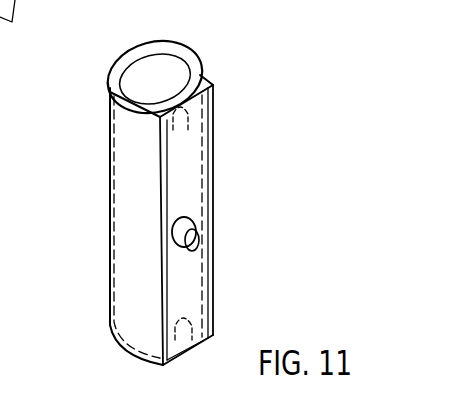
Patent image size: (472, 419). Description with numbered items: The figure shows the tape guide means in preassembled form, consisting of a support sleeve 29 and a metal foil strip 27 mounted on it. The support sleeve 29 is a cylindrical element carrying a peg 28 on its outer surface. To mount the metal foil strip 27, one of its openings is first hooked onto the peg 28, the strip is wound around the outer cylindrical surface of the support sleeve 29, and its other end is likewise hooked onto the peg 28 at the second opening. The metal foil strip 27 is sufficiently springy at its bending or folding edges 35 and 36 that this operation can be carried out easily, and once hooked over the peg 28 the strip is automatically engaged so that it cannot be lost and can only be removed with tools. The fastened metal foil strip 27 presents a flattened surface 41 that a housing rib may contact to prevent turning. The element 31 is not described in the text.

The metal foil strip 27 is at (123, 157).
The peg 28 is at (205, 250).
The support sleeve 29 is at (186, 48).
The adjacent member 31 is at (22, 0).
The bending edge 35 is at (160, 276).
The bending edge 36 is at (214, 177).
The flattened surface 41 is at (183, 296).